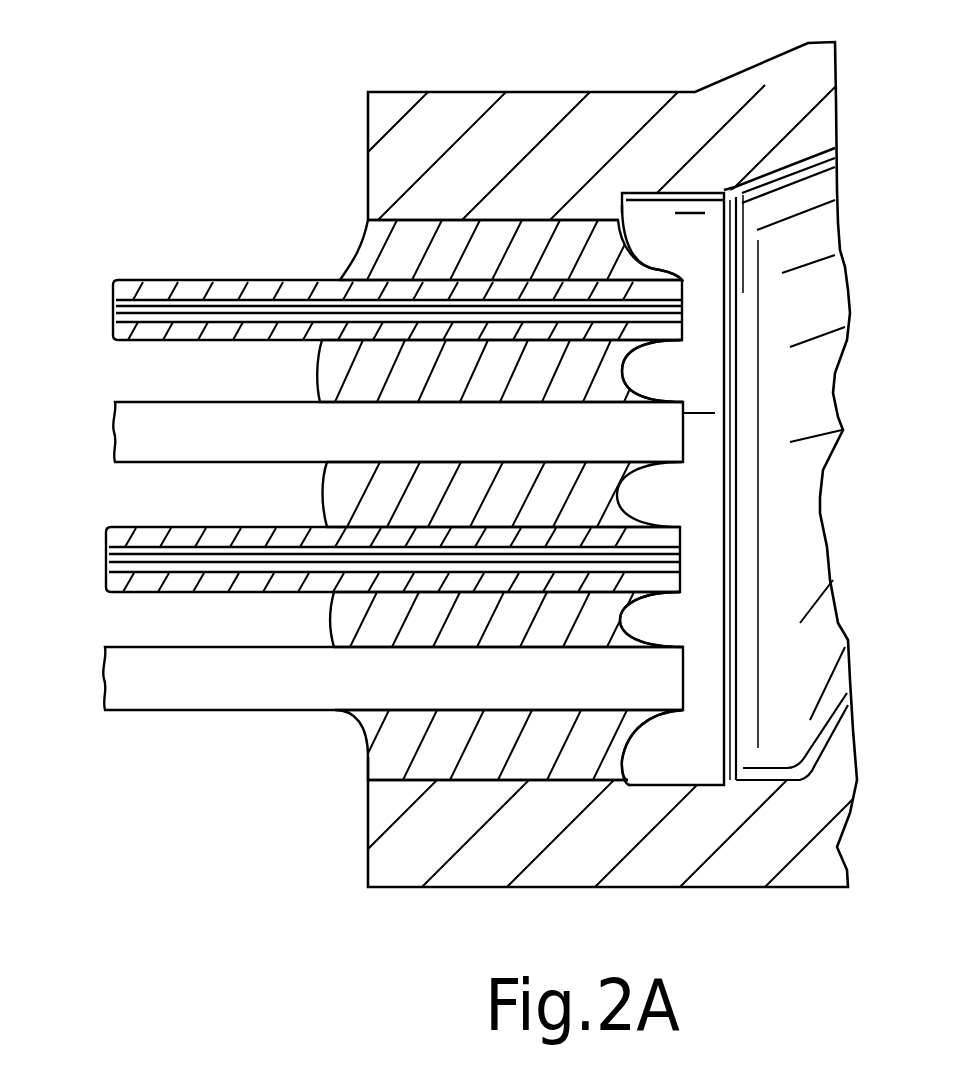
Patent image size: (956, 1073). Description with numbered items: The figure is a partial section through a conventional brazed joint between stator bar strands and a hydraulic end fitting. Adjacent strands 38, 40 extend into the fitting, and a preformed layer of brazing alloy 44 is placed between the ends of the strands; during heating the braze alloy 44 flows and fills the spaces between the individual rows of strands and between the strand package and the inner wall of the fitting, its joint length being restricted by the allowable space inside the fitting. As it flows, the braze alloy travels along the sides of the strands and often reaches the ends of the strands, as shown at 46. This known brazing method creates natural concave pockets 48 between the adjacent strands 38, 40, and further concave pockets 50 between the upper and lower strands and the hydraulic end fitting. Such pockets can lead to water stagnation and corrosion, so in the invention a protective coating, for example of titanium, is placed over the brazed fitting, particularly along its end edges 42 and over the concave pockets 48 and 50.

The strand 38 is at (148, 427).
The strand 40 is at (112, 330).
The end edges 42 is at (736, 293).
The brazing alloy 44 is at (395, 258).
The braze alloy reaching strand ends 46 is at (680, 258).
The concave pockets 48 is at (627, 380).
The concave pockets between strands and fitting 50 is at (632, 253).